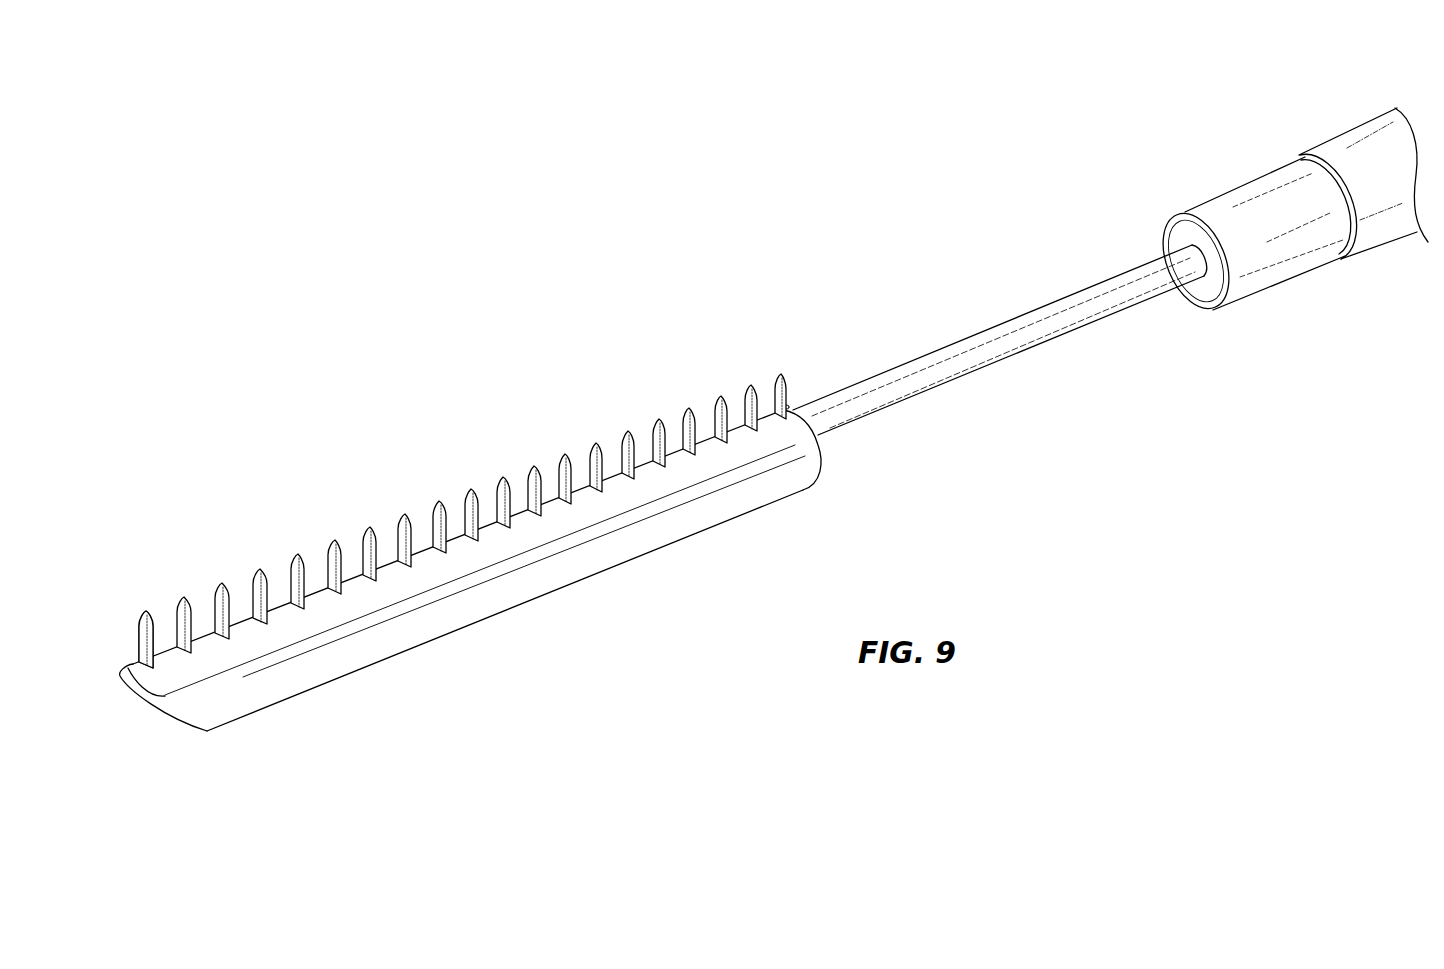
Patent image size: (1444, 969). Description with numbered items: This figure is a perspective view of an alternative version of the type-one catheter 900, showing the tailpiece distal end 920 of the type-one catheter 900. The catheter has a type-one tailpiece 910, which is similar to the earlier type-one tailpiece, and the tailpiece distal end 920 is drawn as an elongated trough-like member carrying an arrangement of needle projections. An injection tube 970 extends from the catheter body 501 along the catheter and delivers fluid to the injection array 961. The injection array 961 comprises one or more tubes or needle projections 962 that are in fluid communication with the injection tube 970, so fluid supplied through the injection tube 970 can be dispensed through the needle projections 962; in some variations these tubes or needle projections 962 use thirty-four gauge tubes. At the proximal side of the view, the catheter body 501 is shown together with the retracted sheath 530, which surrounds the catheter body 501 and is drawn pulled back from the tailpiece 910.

The type-1 catheter 900 is at (373, 242).
The tailpiece 910 is at (303, 452).
The tailpiece distal end 920 is at (393, 658).
The injection array 961 is at (790, 384).
The needle projections 962 is at (142, 616).
The injection tube 970 is at (1023, 348).
The retracted sheath 530 is at (1348, 132).
The catheter body 501 is at (1278, 288).